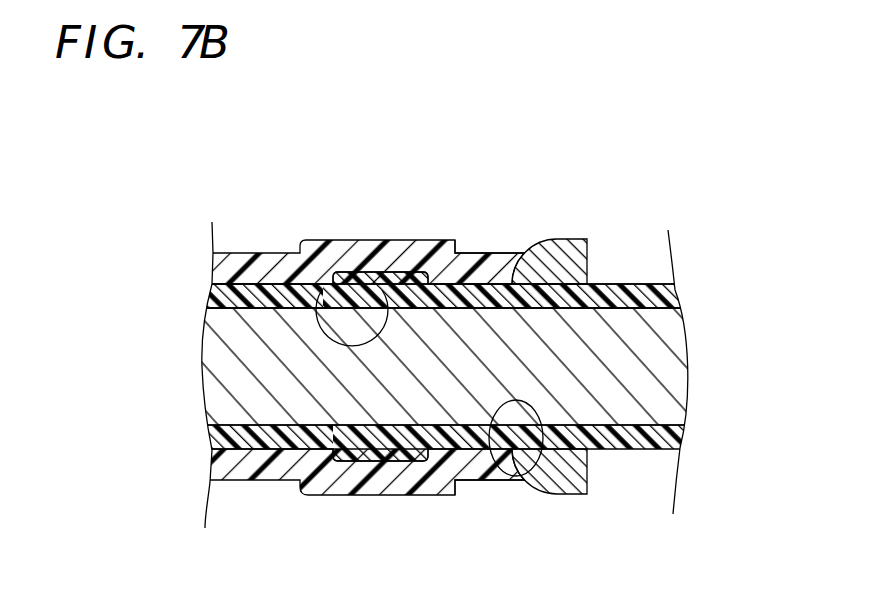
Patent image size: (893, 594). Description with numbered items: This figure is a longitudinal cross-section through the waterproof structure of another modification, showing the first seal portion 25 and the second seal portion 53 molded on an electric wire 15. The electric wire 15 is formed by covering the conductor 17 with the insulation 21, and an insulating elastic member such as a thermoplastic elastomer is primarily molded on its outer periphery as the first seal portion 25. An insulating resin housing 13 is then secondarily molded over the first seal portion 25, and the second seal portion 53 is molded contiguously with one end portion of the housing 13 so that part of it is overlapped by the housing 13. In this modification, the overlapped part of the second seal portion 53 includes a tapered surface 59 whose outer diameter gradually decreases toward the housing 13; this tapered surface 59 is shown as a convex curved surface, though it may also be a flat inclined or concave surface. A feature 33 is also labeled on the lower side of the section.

The housing 13 is at (248, 253).
The electric wire 15 is at (650, 285).
The conductor 17 is at (657, 383).
The insulation 21 is at (630, 285).
The first seal portion 25 is at (314, 292).
The engaging portion 33 is at (490, 448).
The second seal portion 53 is at (575, 239).
The tapered surface 59 is at (508, 253).